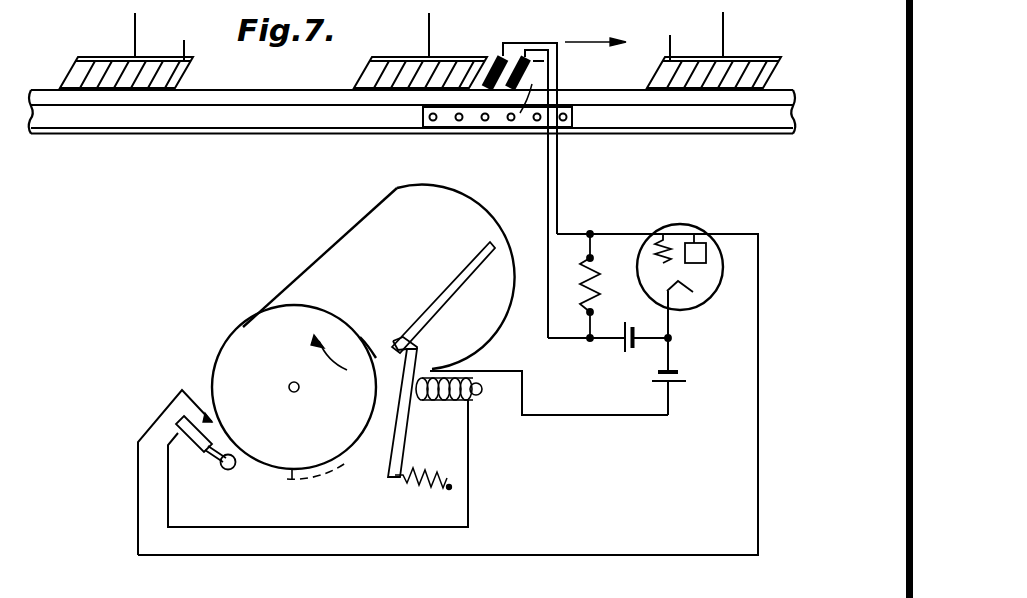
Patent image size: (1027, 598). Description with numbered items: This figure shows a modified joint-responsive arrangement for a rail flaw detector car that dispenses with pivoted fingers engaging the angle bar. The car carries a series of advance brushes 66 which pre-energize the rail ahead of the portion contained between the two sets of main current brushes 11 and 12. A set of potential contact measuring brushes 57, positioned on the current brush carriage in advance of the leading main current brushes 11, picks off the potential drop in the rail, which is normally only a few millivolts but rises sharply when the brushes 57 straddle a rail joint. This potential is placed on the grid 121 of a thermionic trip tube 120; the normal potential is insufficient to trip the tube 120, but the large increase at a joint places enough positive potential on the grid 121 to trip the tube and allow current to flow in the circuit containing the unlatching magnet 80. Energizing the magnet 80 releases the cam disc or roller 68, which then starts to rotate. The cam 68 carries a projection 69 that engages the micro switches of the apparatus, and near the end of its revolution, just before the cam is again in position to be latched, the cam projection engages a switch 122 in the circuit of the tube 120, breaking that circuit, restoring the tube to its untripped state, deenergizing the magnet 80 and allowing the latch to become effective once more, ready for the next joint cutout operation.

The leading main current brushes 11 is at (437, 72).
The main current brushes 12 is at (153, 58).
The advance brushes 66 is at (703, 65).
The potential contact measuring brushes 57 is at (524, 56).
The cam disc or roller 68 is at (236, 341).
The projection 69 is at (330, 462).
The unlatching magnet 80 is at (440, 398).
The thermionic trip tube 120 is at (691, 264).
The grid 121 is at (662, 244).
The switch 122 is at (215, 456).